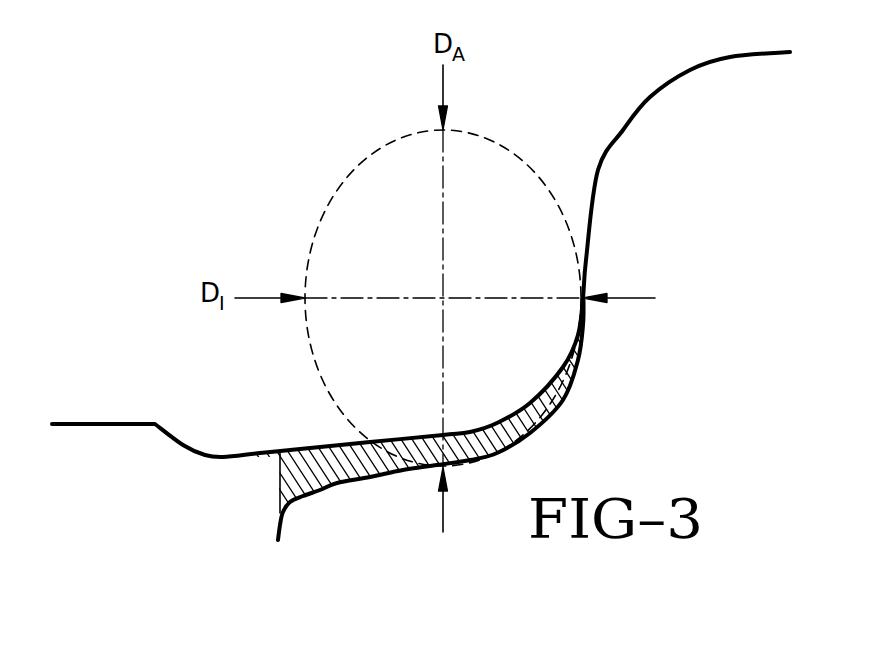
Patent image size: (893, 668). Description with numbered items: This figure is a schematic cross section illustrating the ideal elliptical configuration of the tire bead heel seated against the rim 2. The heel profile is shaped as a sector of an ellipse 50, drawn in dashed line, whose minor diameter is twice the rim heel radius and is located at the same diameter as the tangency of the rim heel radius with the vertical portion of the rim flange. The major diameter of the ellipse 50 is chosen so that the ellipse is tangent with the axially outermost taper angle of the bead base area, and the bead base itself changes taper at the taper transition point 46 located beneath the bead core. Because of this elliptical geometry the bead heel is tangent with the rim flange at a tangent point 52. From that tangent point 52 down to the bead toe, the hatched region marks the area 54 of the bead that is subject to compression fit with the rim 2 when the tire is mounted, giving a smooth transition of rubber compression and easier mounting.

The rim 2 is at (183, 445).
The taper transition point 46 is at (412, 469).
The ellipse 50 is at (368, 153).
The tangent point 52 is at (584, 298).
The area 54 is at (323, 466).